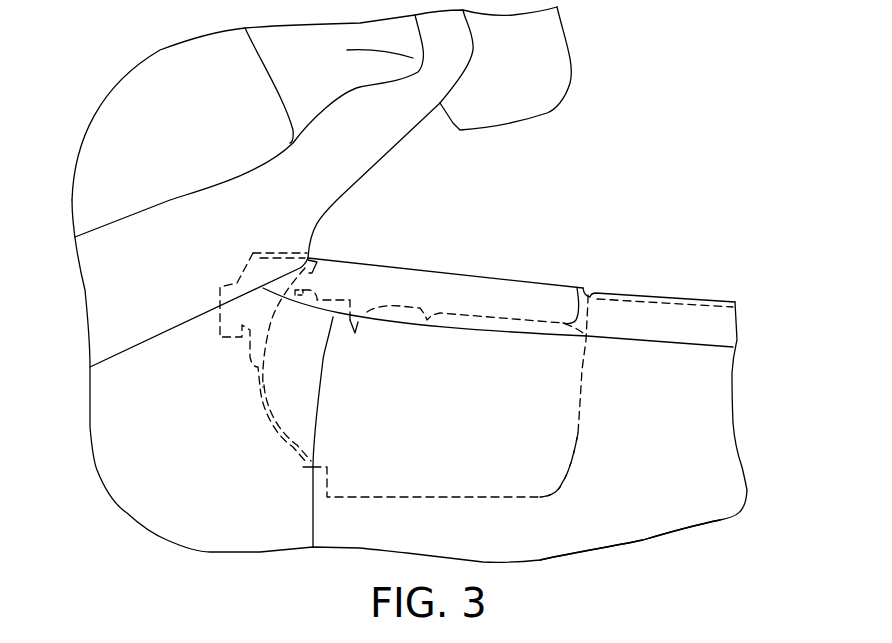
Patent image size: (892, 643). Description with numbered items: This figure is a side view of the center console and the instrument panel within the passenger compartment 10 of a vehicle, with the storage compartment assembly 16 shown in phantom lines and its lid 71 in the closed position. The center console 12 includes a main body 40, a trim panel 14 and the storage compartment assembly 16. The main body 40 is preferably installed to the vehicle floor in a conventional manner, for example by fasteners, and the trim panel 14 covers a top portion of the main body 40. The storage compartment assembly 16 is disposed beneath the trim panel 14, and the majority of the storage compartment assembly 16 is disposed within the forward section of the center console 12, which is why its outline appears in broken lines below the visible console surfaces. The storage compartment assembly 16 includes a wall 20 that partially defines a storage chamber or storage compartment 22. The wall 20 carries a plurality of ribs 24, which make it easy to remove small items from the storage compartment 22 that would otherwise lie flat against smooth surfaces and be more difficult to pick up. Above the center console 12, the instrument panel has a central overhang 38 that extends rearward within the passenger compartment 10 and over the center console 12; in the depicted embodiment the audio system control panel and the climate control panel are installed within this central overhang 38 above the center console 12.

The passenger compartment 10 is at (648, 147).
The center console 12 is at (690, 403).
The trim panel 14 is at (707, 300).
The storage compartment assembly 16 is at (585, 437).
The wall 20 is at (578, 395).
The storage compartment 22 is at (462, 375).
The ribs 24 is at (565, 322).
The central overhang 38 is at (530, 82).
The main body 40 is at (690, 482).
The lid 71 is at (383, 282).